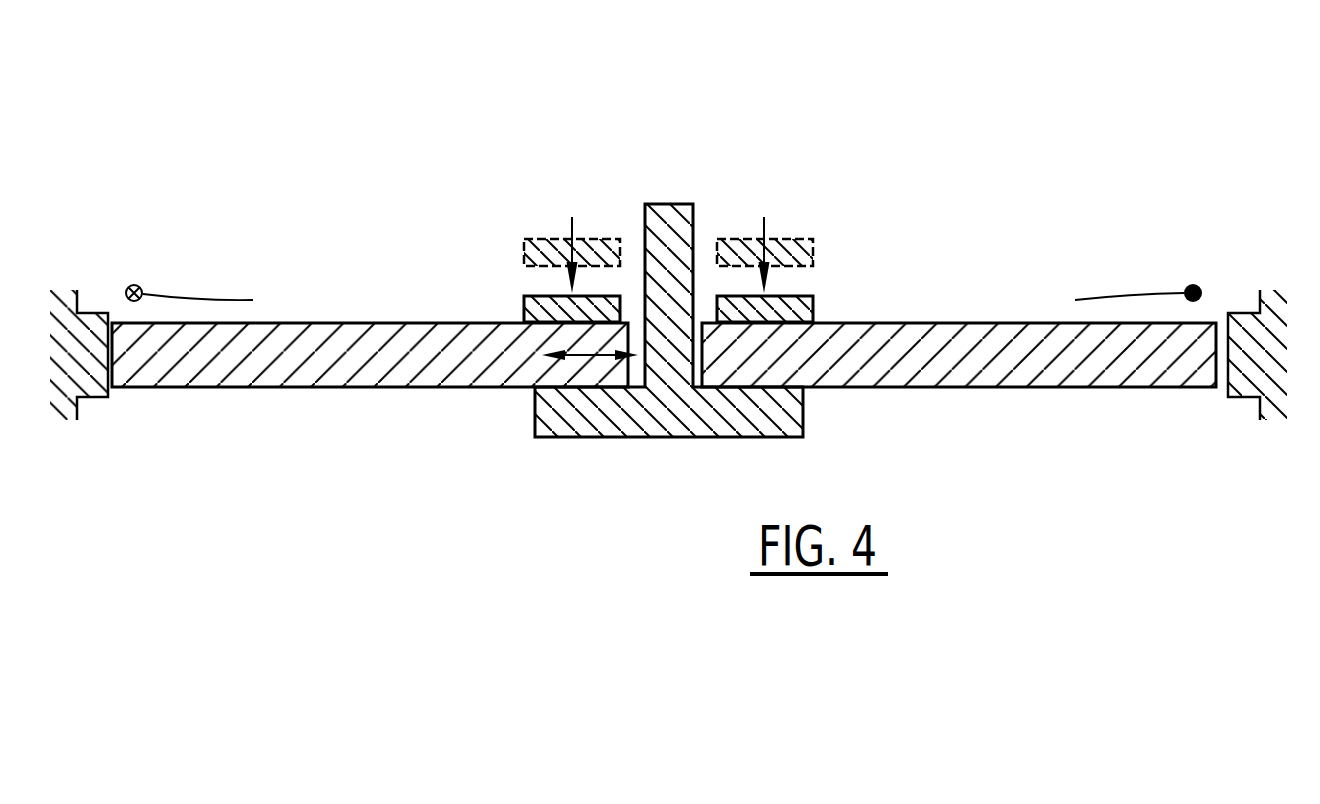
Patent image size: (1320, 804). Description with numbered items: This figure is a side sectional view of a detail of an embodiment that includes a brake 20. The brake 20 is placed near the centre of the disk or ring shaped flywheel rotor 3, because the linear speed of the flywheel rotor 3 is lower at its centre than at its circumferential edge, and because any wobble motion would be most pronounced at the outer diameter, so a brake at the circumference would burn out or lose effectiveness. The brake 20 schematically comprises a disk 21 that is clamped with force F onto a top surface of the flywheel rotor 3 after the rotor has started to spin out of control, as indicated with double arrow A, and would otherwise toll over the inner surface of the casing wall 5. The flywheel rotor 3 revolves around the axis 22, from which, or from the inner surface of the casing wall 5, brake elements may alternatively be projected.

The flywheel rotor 3 is at (937, 338).
The casing wall 5 is at (87, 387).
The brake 20 is at (665, 237).
The clamping jaw / pressure block 21 is at (530, 308).
The axis 22 is at (665, 203).
The force F is at (667, 237).
The double arrow A is at (593, 352).